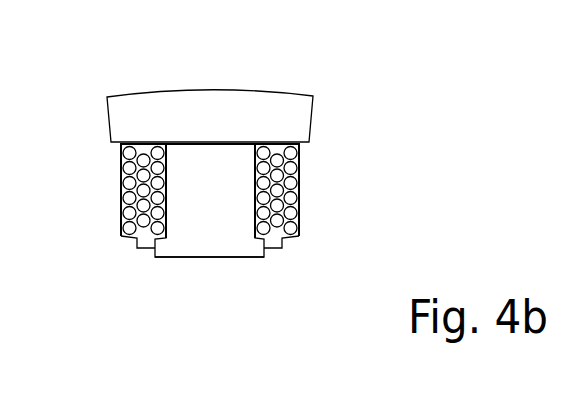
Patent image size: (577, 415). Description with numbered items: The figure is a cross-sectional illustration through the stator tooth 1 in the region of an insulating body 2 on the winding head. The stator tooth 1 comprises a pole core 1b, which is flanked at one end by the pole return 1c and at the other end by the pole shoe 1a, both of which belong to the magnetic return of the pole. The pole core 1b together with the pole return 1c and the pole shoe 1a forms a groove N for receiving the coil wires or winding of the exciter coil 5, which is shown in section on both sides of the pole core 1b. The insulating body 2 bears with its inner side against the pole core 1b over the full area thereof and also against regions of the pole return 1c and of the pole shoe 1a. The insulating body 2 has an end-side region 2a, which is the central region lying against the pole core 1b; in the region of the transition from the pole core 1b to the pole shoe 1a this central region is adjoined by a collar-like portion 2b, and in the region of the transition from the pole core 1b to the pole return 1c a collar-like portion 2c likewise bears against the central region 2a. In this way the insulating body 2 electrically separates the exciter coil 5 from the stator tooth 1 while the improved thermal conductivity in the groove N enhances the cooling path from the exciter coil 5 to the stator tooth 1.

The stator tooth 1 is at (185, 67).
The pole shoe 1a is at (212, 258).
The pole core 1b is at (285, 212).
The pole return 1c is at (233, 107).
The insulating body 2 is at (239, 204).
The end-side region 2a is at (137, 195).
The collar-like portion 2b is at (150, 253).
The collar-like portion 2c is at (284, 142).
The exciter coil 5 is at (227, 220).
The groove N is at (285, 227).